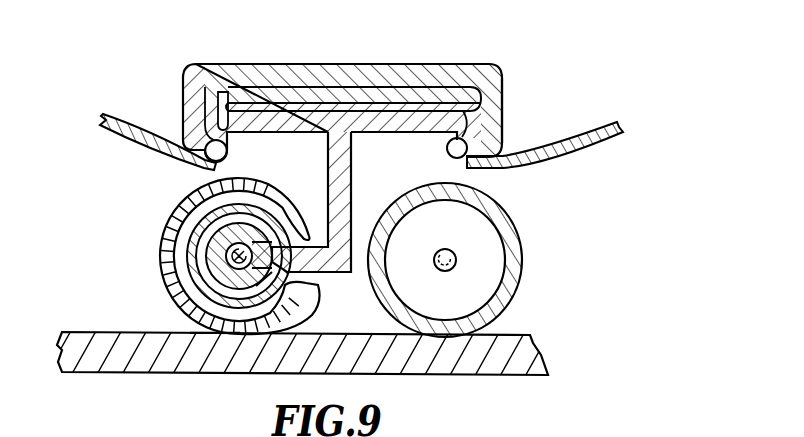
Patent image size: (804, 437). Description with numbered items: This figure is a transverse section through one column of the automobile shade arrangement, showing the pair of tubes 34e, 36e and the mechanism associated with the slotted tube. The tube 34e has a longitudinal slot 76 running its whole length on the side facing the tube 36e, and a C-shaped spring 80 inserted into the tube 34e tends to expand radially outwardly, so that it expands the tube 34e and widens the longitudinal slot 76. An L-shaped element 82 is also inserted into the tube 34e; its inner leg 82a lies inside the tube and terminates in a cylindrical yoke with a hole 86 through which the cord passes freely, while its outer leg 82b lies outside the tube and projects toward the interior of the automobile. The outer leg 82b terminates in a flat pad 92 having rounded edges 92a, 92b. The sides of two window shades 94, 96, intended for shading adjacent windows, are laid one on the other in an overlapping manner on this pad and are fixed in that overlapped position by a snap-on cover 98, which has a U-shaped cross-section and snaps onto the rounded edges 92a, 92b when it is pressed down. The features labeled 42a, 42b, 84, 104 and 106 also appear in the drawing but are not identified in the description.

The flat pad 92 is at (399, 122).
The rounded edge 92a is at (464, 116).
The rounded edge 92b is at (215, 97).
The L-shaped element 82 is at (400, 170).
The inner leg 82a is at (306, 236).
The outer leg 82b is at (327, 246).
The snap-on cover 98 is at (497, 82).
The window shade 96 is at (133, 121).
The window shade 94 is at (576, 141).
The tube 34e is at (208, 256).
The outer roller shell 42a is at (200, 212).
The inner roller ring 42b is at (208, 230).
The roller hub 84 is at (222, 251).
The hole 86 is at (230, 258).
The tube 36e is at (520, 276).
The longitudinal slot 76 is at (258, 374).
The C-shaped spring 80 is at (210, 326).
The support 104 is at (57, 431).
The support 106 is at (623, 429).